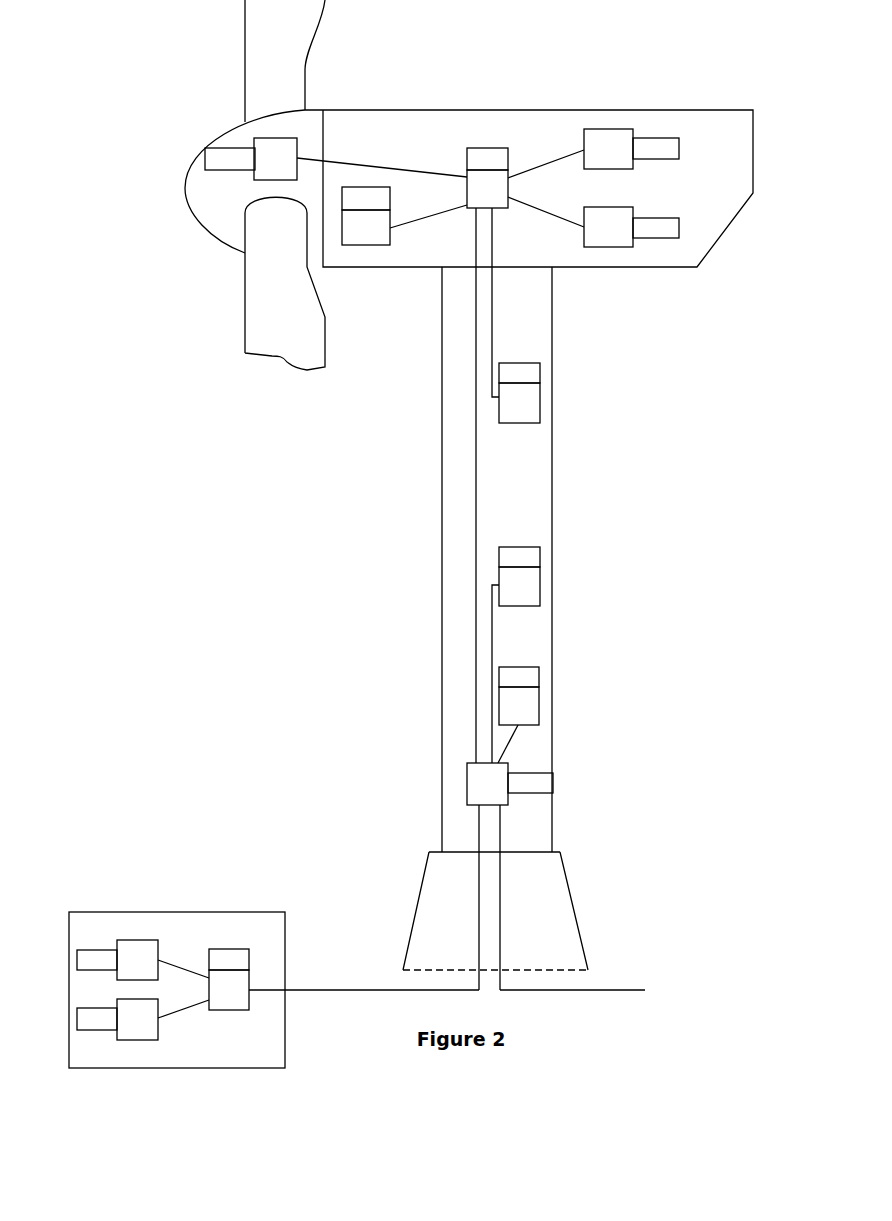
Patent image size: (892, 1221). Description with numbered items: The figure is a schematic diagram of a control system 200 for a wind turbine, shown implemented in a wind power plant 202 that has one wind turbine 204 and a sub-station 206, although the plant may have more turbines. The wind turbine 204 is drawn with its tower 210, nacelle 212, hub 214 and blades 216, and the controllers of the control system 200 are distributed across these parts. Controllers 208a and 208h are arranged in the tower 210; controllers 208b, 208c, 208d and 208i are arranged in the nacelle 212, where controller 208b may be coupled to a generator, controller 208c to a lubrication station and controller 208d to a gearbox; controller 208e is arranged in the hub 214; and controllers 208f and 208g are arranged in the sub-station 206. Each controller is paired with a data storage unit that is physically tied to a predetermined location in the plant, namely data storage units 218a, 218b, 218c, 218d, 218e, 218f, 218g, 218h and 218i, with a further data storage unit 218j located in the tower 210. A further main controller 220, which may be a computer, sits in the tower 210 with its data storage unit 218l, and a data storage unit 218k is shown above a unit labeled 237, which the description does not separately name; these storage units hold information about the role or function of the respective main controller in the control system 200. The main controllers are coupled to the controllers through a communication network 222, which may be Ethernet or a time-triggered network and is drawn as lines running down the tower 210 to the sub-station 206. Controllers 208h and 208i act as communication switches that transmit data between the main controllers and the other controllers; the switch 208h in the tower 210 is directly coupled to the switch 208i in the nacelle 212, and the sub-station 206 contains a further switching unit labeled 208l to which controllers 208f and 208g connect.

The control system 200 is at (529, 191).
The wind power plant 202 is at (675, 777).
The wind turbine 204 is at (663, 268).
The sub-station 206 is at (195, 912).
The controller 208a is at (518, 725).
The controller 208b is at (608, 149).
The controller 208c is at (608, 227).
The controller 208d is at (404, 225).
The controller 208e is at (360, 159).
The controller 208f is at (163, 960).
The controller 208g is at (163, 1019).
The communication switch 208h is at (487, 784).
The communication switch 208i is at (525, 188).
The sensor node 208l is at (229, 990).
The tower 210 is at (552, 492).
The nacelle 212 is at (472, 110).
The hub 214 is at (202, 227).
The blades 216 is at (245, 305).
The data storage unit 218a is at (519, 677).
The data storage unit 218b is at (656, 148).
The data storage unit 218c is at (656, 228).
The data storage unit 218d is at (366, 198).
The data storage unit 218e is at (230, 159).
The data storage unit 218f is at (97, 960).
The data storage unit 218g is at (97, 1019).
The data storage unit 218h is at (530, 783).
The data storage unit 218i is at (487, 159).
The data storage unit 218j is at (519, 373).
The data storage unit 218k is at (519, 557).
The data storage unit 218l is at (229, 959).
The further main controller 220 is at (519, 403).
The communication network 222 is at (477, 517).
The node 237 is at (519, 586).